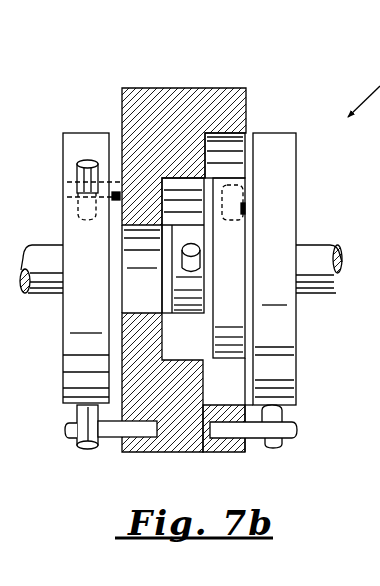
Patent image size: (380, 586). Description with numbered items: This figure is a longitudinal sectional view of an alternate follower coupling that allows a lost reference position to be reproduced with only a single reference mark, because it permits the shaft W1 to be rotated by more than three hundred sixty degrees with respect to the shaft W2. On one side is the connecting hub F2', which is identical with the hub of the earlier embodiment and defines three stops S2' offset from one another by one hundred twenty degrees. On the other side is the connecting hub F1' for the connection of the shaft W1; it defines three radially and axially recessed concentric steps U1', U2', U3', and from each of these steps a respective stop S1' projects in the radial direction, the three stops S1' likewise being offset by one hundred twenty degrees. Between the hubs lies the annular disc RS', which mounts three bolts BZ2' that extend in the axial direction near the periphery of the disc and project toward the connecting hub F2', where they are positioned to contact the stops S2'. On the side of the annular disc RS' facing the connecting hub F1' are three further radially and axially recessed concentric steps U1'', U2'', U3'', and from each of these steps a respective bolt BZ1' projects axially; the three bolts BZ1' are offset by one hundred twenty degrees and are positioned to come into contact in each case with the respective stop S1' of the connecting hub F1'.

The annular disc RS' is at (184, 168).
The connecting hub F1' is at (283, 243).
The connecting hub F2' is at (73, 232).
The stop S1' is at (268, 296).
The stop S2' is at (67, 304).
The bolt BZ1' is at (276, 332).
The bolt BZ2' is at (111, 300).
The shaft W1 is at (323, 267).
The shaft W2 is at (42, 268).
The step U1' is at (296, 379).
The step U2' is at (281, 260).
The step U3' is at (248, 268).
The step U1'' is at (269, 431).
The step U2'' is at (227, 448).
The step U3'' is at (163, 409).